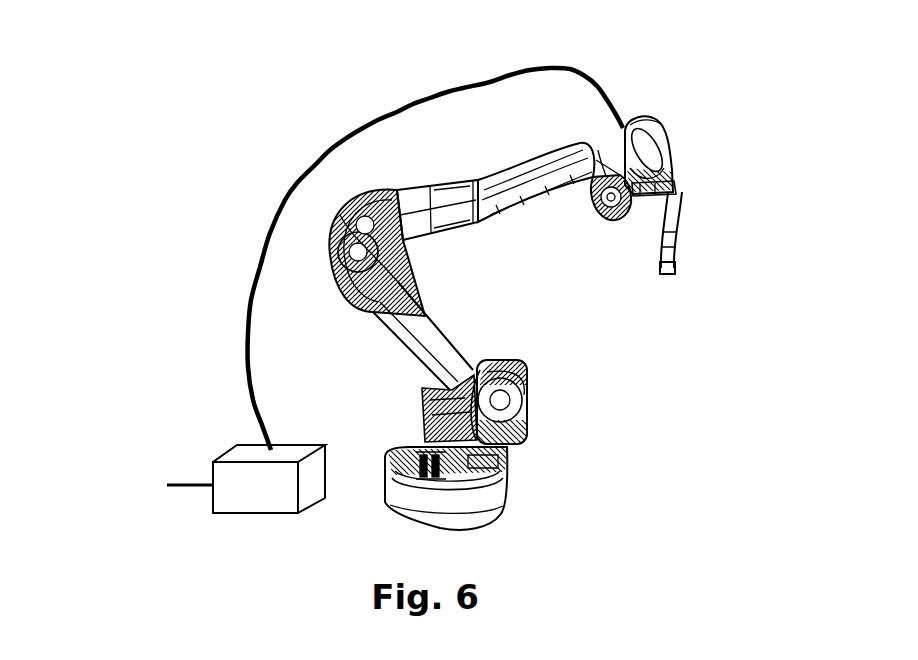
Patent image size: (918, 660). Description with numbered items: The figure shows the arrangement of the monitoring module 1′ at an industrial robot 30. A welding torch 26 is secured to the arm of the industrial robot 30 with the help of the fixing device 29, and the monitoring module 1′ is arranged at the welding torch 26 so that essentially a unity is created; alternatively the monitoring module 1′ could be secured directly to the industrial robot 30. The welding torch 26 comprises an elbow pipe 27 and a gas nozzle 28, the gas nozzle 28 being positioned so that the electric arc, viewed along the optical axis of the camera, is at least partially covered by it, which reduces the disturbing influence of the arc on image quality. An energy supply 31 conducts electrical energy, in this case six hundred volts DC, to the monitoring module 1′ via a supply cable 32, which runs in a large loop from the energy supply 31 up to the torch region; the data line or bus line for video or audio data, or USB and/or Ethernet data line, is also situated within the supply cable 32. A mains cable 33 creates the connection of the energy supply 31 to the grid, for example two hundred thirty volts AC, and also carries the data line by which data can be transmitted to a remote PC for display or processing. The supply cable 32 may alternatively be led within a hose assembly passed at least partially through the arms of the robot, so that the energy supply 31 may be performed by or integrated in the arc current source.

The monitoring module 1′ is at (658, 132).
The welding torch 26 is at (675, 168).
The elbow pipe 27 is at (678, 215).
The gas nozzle 28 is at (675, 257).
The fixing device 29 is at (603, 218).
The industrial robot 30 is at (507, 408).
The energy supply 31 is at (242, 450).
The supply cable 32 is at (278, 205).
The mains cable 33 is at (183, 487).